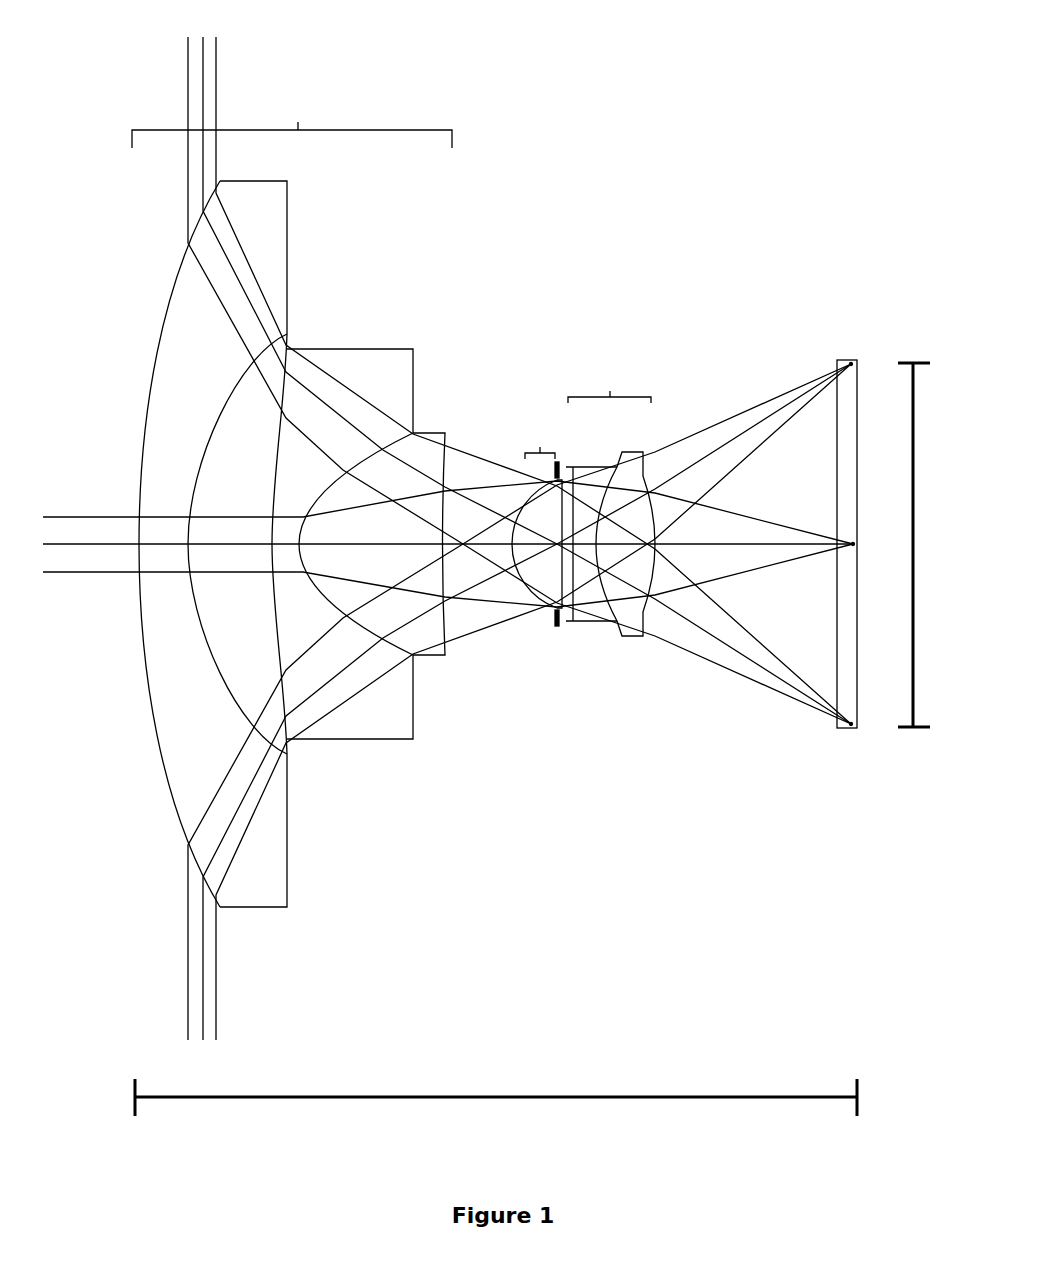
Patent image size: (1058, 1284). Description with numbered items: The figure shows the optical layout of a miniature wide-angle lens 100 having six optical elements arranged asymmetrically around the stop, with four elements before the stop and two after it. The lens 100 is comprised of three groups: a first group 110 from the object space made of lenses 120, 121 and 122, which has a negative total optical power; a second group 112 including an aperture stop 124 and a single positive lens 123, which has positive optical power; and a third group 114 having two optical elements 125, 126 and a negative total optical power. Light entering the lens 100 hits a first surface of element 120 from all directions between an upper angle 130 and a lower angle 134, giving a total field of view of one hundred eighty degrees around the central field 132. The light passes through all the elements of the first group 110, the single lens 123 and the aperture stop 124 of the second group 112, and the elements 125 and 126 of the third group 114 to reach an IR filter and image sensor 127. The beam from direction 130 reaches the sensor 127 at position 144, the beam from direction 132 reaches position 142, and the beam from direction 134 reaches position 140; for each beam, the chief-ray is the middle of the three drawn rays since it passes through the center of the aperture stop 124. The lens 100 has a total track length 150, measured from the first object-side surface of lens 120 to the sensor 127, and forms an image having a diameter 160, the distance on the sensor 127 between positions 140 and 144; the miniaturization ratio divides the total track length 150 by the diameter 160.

The miniature wide-angle lens 100 is at (448, 277).
The first group 110 is at (292, 122).
The second group 112 is at (538, 442).
The third group 114 is at (609, 386).
The lens 120 is at (213, 559).
The lens 121 is at (350, 558).
The lens 122 is at (434, 557).
The single positive lens 123 is at (537, 572).
The aperture stop 124 is at (560, 628).
The optical element 125 is at (591, 566).
The optical element 126 is at (636, 557).
The IR filter and image sensor 127 is at (847, 560).
The upper angle 130 is at (515, 367).
The central field 132 is at (448, 544).
The lower angle 134 is at (516, 722).
The position 140 is at (873, 365).
The position 142 is at (874, 545).
The position 144 is at (873, 718).
The total track length 150 is at (496, 1104).
The image diameter 160 is at (929, 545).